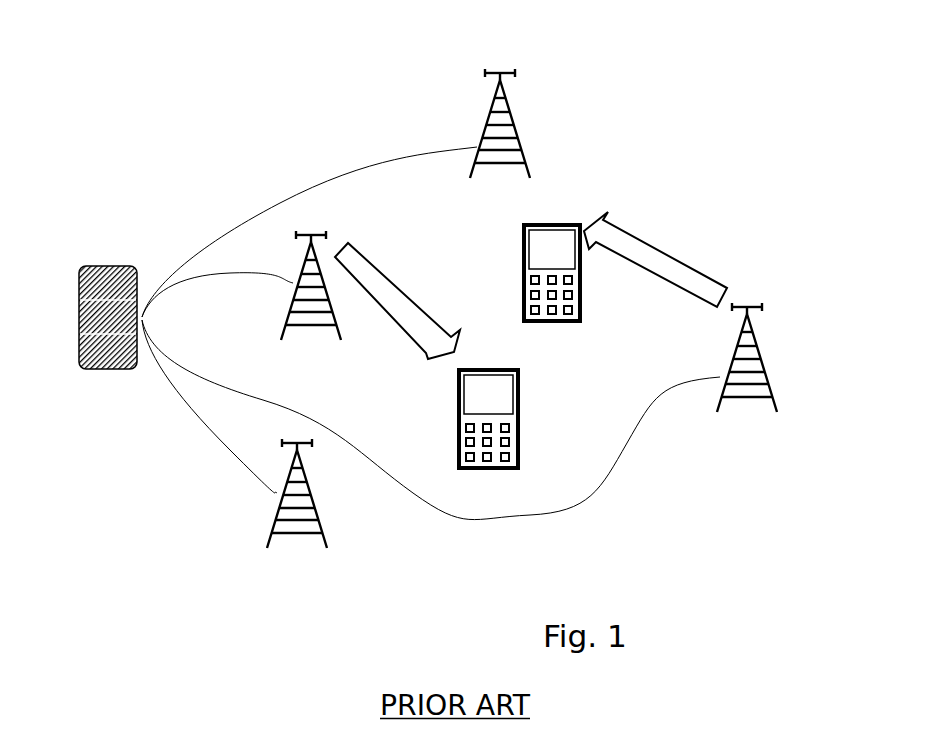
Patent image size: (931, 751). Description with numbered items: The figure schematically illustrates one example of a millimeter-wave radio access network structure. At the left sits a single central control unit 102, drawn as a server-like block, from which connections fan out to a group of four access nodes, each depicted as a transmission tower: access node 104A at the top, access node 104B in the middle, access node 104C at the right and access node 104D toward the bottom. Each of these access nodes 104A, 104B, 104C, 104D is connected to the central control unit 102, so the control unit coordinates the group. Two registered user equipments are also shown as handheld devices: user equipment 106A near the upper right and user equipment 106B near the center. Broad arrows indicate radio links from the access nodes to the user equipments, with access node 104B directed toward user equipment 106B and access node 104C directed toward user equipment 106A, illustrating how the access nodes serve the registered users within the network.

The central control unit 102 is at (87, 338).
The access node 104A is at (535, 123).
The access node 104B is at (319, 302).
The access node 104C is at (772, 378).
The access node 104D is at (313, 507).
The user equipment 106A is at (576, 291).
The user equipment 106B is at (523, 419).